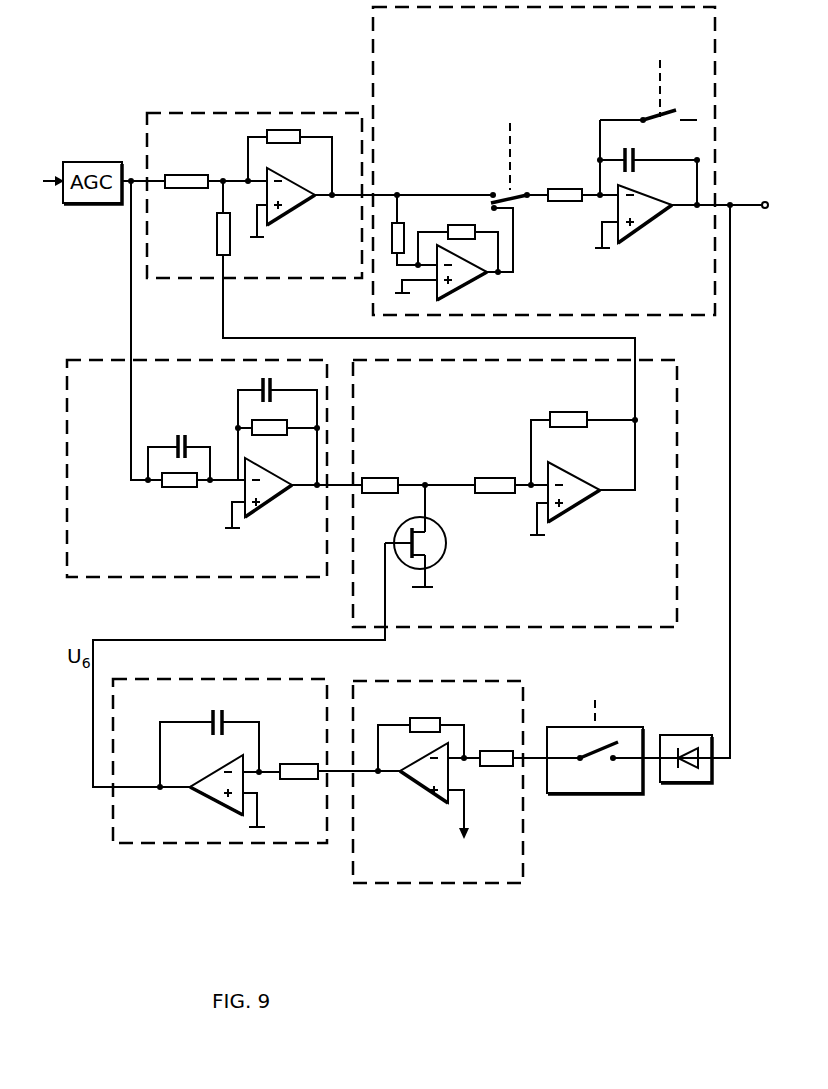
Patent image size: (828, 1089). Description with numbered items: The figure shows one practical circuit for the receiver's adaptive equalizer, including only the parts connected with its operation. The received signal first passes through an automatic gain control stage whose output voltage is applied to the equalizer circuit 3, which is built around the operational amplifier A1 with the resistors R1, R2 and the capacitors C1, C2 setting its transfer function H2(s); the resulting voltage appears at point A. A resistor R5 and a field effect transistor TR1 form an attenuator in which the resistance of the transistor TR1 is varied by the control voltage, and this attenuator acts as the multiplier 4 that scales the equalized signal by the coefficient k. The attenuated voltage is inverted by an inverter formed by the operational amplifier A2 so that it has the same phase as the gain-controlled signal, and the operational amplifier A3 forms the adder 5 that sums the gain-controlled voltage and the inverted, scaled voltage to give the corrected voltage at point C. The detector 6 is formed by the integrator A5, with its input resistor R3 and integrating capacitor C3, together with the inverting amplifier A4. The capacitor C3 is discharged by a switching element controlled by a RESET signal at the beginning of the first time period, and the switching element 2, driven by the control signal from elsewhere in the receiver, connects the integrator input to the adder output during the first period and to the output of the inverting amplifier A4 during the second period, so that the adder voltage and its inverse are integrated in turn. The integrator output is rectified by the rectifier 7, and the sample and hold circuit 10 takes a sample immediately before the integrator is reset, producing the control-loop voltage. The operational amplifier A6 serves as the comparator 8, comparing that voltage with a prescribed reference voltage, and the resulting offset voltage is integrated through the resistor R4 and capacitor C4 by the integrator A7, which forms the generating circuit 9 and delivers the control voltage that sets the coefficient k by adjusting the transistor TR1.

The switching element 2 is at (507, 192).
The equalizer circuit 3 is at (214, 486).
The multiplier 4 is at (529, 493).
The adder 5 is at (320, 178).
The detector 6 is at (570, 177).
The rectifier 7 is at (703, 783).
The comparator 8 is at (434, 801).
The generating circuit 9 is at (220, 783).
The sample and hold circuit 10 is at (613, 794).
The operational amplifier A1 is at (278, 498).
The operational amplifier A2 is at (585, 505).
The operational amplifier A3 is at (285, 208).
The inverting amplifier A4 is at (470, 280).
The integrator A5 is at (646, 232).
The operational amplifier A6 is at (415, 795).
The integrator A7 is at (215, 778).
The resistor R1 is at (178, 497).
The resistor R2 is at (272, 436).
The resistor R3 is at (567, 192).
The resistor R4 is at (296, 762).
The resistor R5 is at (370, 477).
The capacitor C1 is at (188, 438).
The capacitor C2 is at (275, 385).
The capacitor C3 is at (641, 156).
The capacitor C4 is at (232, 718).
The field effect transistor TR1 is at (433, 557).